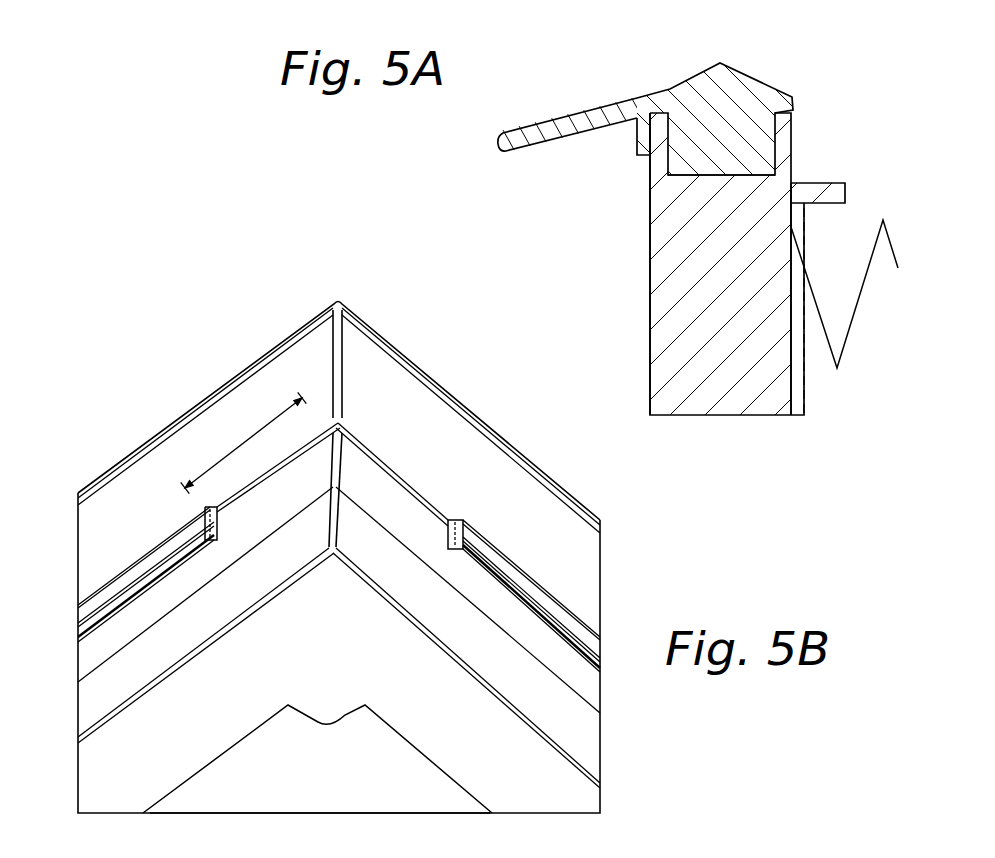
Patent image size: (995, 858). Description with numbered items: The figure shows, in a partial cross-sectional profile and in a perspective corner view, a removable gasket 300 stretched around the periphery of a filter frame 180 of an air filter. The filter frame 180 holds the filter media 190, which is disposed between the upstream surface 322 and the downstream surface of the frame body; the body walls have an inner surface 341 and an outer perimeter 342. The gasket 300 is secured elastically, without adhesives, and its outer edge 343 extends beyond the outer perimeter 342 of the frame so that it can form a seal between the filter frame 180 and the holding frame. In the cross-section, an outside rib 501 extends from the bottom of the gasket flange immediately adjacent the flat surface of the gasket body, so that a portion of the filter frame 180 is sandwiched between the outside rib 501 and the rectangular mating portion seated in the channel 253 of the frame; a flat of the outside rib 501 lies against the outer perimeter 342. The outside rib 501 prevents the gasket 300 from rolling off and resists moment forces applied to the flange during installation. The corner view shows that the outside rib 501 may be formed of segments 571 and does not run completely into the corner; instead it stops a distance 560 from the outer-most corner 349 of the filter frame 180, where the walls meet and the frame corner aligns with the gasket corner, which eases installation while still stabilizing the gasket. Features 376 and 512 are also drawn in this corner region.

In FIG. 5A, the gasket 300 is at (725, 62).
In FIG. 5A, the outer edge 343 is at (583, 110).
In FIG. 5B, the outer edge 343 is at (168, 386).
In FIG. 5A, the outside rib 501 is at (635, 143).
In FIG. 5B, the outside rib 501 is at (125, 582).
In FIG. 5A, the channel 253 is at (687, 177).
In FIG. 5A, the outer perimeter 342 is at (650, 295).
In FIG. 5A, the filter frame 180 is at (646, 340).
In FIG. 5B, the filter frame 180 is at (472, 724).
In FIG. 5A, the inner surface 341 is at (791, 290).
In FIG. 5A, the filter media 190 is at (850, 325).
In FIG. 5B, the filter media 190 is at (372, 799).
In FIG. 5B, the roof surface 376 is at (387, 372).
In FIG. 5B, the distance 560 is at (243, 443).
In FIG. 5B, the outer-most corner 349 is at (335, 485).
In FIG. 5B, the segment 571 is at (170, 562).
In FIG. 5B, the hook 512 is at (508, 583).
In FIG. 5B, the upstream surface 322 is at (173, 768).